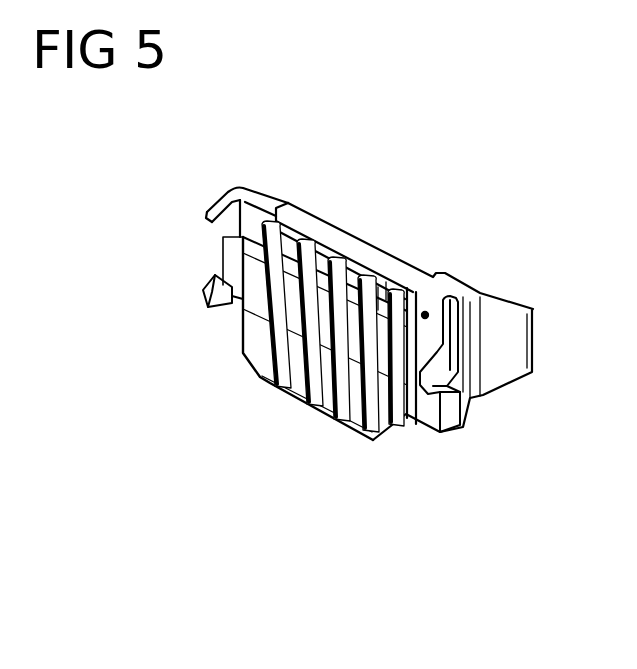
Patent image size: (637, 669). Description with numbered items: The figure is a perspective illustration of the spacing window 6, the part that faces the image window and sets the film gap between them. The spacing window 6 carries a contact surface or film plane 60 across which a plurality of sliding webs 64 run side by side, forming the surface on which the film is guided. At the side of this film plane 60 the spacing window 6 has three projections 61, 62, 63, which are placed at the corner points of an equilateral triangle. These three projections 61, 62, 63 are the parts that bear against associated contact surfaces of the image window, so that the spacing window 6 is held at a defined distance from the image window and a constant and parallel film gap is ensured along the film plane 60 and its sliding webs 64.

The spacing window 6 is at (345, 228).
The film plane 60 is at (345, 432).
The projection 61 is at (210, 210).
The projection 62 is at (202, 305).
The projection 63 is at (463, 427).
The sliding webs 64 is at (353, 281).